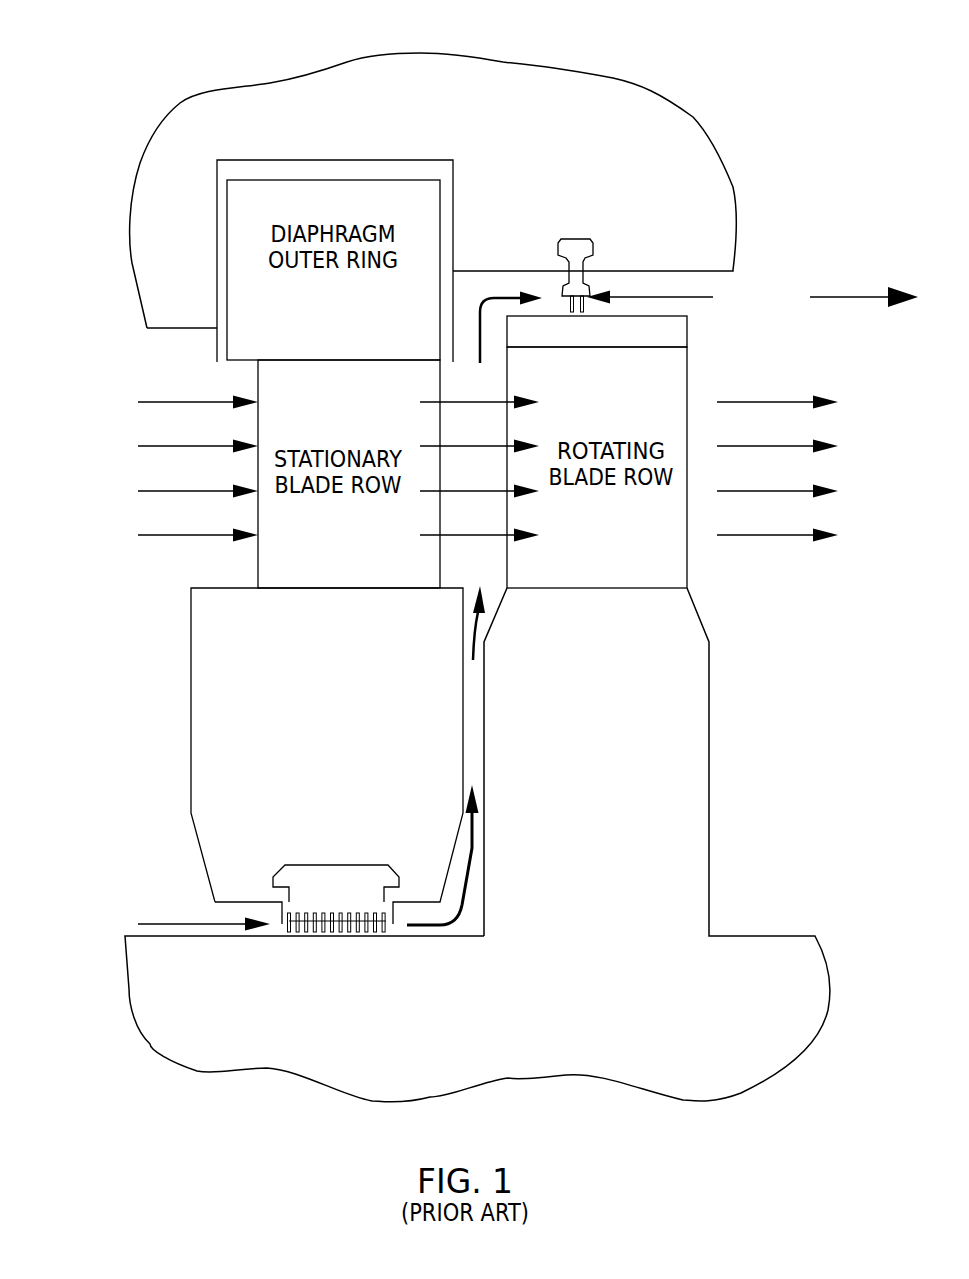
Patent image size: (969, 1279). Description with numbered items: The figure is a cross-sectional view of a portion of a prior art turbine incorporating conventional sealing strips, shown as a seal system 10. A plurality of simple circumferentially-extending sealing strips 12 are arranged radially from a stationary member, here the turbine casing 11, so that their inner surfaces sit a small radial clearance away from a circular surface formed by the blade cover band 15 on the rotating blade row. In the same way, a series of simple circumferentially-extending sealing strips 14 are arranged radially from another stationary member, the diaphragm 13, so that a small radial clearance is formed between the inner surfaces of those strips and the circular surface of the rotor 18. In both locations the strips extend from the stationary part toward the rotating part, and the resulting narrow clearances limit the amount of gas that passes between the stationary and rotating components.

The seal system 10 is at (726, 41).
The turbine casing 11 is at (695, 131).
The sealing strips 12 is at (565, 298).
The diaphragm 13 is at (212, 776).
The sealing strips 14 is at (297, 937).
The blade cover band 15 is at (673, 337).
The rotor 18 is at (755, 949).